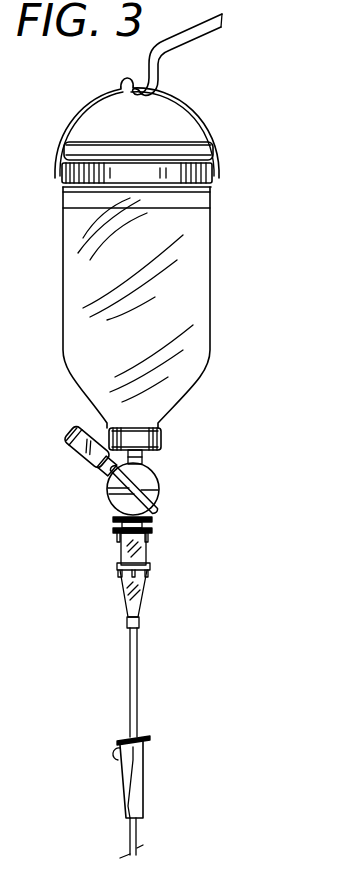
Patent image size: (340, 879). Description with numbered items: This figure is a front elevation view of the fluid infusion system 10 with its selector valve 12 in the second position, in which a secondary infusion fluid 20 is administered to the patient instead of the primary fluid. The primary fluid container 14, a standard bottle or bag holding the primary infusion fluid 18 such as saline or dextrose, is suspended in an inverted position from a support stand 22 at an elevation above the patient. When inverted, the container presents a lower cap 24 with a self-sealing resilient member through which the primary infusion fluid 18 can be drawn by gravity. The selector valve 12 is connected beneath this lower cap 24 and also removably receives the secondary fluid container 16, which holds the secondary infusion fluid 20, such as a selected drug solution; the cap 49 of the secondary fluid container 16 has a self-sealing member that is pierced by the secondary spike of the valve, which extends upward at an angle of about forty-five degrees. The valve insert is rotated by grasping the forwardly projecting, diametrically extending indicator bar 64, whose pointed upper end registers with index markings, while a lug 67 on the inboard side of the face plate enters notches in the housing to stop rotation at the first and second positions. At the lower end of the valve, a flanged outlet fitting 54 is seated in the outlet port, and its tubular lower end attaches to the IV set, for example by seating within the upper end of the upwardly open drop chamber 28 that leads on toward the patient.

The fluid infusion system 10 is at (66, 634).
The selector valve 12 is at (172, 476).
The primary fluid container 14 is at (197, 147).
The secondary fluid container 16 is at (62, 442).
The primary infusion fluid 18 is at (190, 212).
The secondary infusion fluid 20 is at (77, 425).
The support stand 22 is at (194, 40).
The lower cap 24 is at (160, 433).
The drop chamber 28 is at (138, 596).
The cap 49 is at (101, 468).
The flanged outlet fitting 54 is at (152, 527).
The indicator bar 64 is at (107, 493).
The lug 67 is at (158, 482).